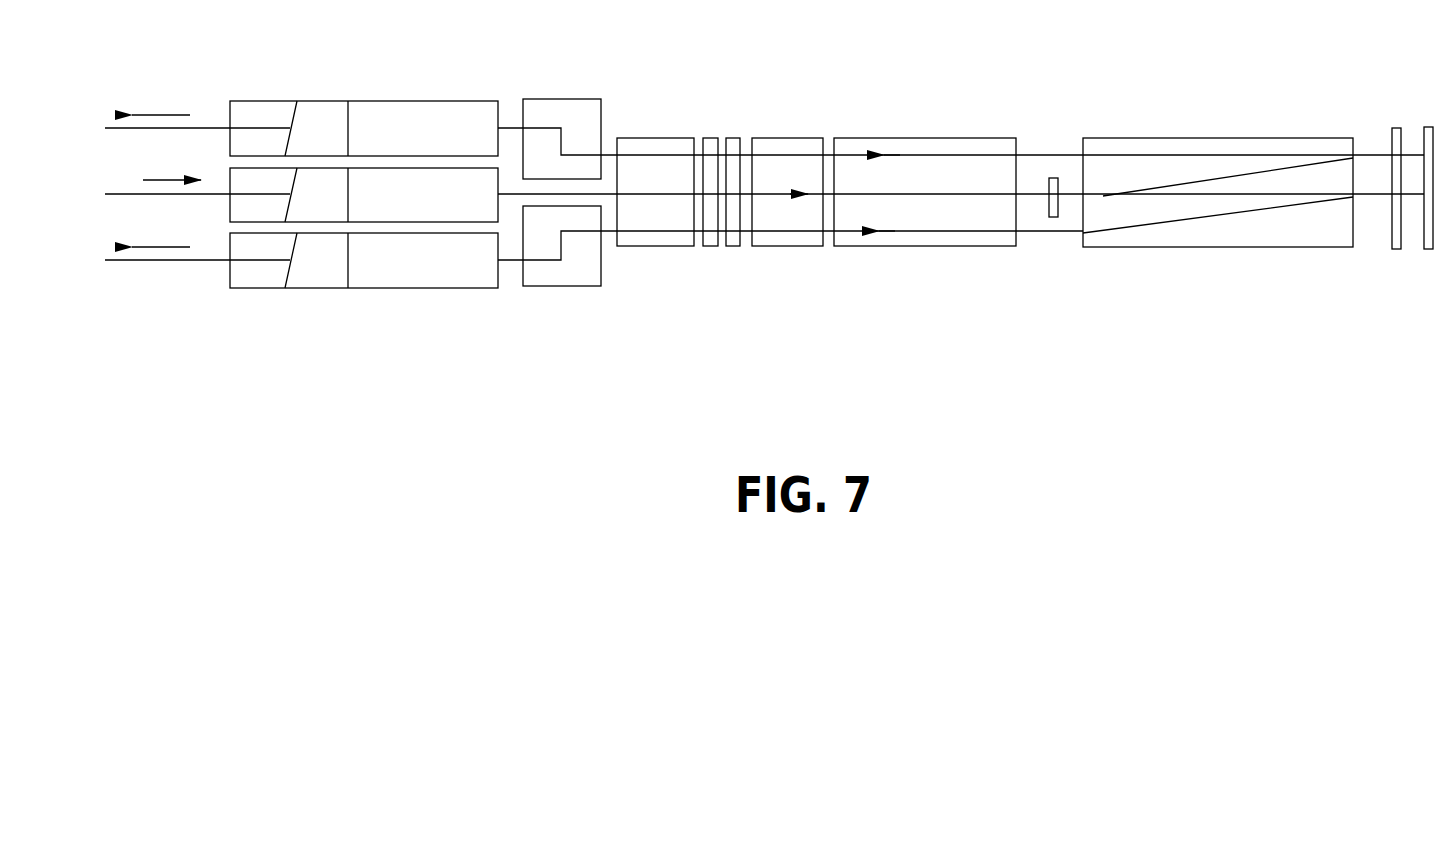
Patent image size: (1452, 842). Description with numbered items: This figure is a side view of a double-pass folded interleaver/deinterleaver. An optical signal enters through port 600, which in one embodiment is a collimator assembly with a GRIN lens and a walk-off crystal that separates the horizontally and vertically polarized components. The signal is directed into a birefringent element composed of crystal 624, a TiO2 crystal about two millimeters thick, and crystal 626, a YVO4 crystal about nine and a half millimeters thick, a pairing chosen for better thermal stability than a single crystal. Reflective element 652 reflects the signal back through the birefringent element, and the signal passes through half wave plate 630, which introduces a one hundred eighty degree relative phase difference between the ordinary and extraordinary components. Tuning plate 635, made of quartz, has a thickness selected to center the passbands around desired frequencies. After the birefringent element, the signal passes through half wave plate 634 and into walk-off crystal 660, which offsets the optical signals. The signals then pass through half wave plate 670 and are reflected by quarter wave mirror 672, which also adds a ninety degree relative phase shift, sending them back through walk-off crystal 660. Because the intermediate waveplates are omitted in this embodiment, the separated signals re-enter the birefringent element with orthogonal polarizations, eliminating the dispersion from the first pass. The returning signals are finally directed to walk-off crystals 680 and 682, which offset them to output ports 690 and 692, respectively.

The port 600 is at (230, 175).
The port 692 is at (448, 101).
The port 690 is at (440, 288).
The walk-off crystal 682 is at (553, 99).
The walk-off crystal 680 is at (573, 286).
The reflective element 652 is at (667, 246).
The half wave plate 630 is at (708, 138).
The tuning plate 635 is at (732, 246).
The crystal 624 is at (790, 246).
The crystal 626 is at (953, 138).
The half wave plate 634 is at (1050, 178).
The walk-off crystal 660 is at (1217, 138).
The half wave plate 670 is at (1400, 128).
The quarter wave mirror 672 is at (1430, 249).